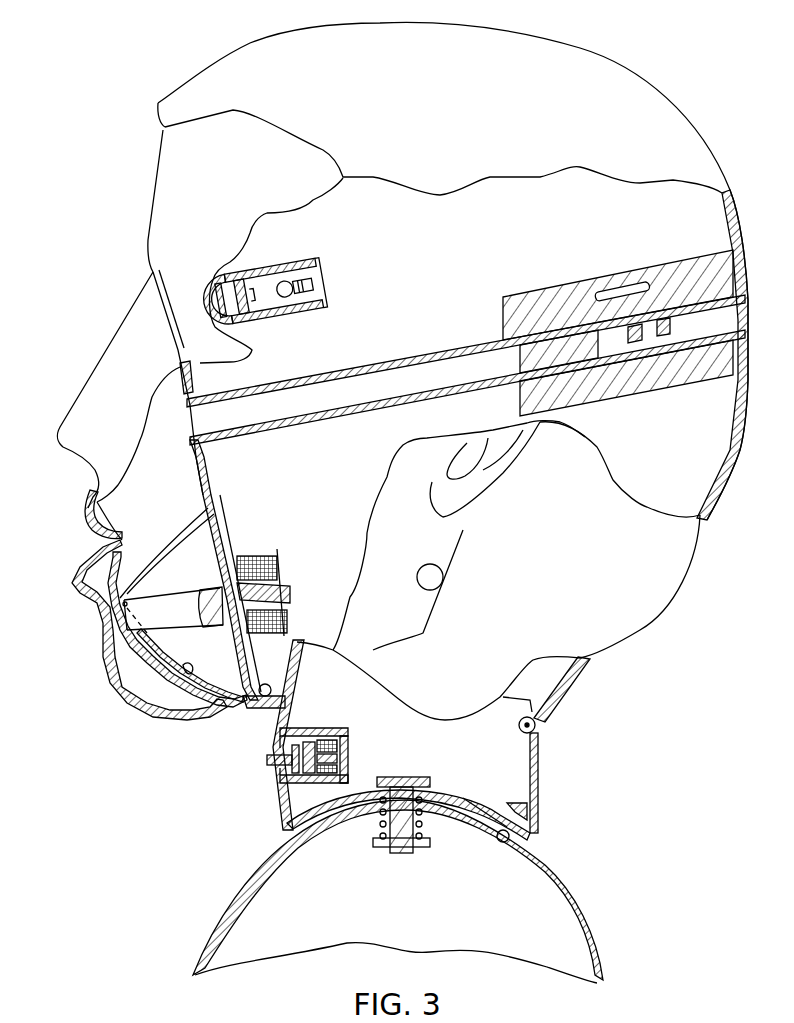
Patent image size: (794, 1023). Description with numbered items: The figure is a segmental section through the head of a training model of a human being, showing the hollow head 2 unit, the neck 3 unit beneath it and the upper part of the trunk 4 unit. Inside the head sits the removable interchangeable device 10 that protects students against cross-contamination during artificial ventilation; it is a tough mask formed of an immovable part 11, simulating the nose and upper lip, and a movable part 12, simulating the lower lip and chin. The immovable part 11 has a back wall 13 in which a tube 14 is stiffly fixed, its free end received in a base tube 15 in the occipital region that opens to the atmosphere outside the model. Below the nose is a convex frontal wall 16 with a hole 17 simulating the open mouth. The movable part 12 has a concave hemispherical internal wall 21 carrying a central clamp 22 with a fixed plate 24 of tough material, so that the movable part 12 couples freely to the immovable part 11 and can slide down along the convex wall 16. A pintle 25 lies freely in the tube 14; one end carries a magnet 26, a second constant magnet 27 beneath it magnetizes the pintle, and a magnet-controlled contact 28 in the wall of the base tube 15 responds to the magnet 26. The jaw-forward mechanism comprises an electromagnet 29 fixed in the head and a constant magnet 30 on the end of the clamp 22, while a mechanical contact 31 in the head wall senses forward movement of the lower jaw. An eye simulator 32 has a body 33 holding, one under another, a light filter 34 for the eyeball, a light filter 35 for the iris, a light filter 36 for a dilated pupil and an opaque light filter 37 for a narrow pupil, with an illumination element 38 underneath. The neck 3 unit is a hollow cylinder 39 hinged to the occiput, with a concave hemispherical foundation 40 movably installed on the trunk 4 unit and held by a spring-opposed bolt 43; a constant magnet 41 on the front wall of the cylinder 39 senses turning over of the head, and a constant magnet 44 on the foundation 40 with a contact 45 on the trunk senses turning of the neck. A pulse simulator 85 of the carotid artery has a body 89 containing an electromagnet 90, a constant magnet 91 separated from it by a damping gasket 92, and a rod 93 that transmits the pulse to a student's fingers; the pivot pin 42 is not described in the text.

The head unit 2 is at (657, 110).
The neck unit 3 is at (593, 767).
The trunk unit 4 is at (597, 923).
The interchangeable device 10 is at (47, 460).
The immovable part of the mask 11 is at (130, 353).
The movable part of the mask 12 is at (97, 627).
The back wall 13 is at (192, 463).
The tube 14 is at (407, 360).
The base tube 15 is at (538, 297).
The convex frontal wall 16 is at (187, 698).
The hole 17 is at (100, 541).
The internal wall 21 is at (147, 657).
The clamp 22 is at (153, 598).
The plate 24 is at (170, 653).
The pintle 25 is at (513, 337).
The magnet 26 is at (632, 376).
The constant magnet 27 is at (667, 350).
The contact 28 is at (615, 284).
The electromagnet 29 is at (264, 556).
The constant magnet 30 is at (205, 598).
The mechanical contact 31 is at (443, 571).
The eye simulator 32 is at (269, 293).
The body 33 is at (310, 313).
The light filter 34 is at (216, 304).
The light filter 35 is at (232, 320).
The light filter 36 is at (257, 308).
The opaque light filter 37 is at (262, 280).
The illumination element 38 is at (316, 285).
The cylinder 39 is at (538, 753).
The foundation 40 is at (480, 803).
The constant magnet 41 is at (295, 641).
The pivot pin 42 is at (266, 684).
The spring-opposed bolt 43 is at (387, 820).
The constant magnet 44 is at (527, 812).
The contact 45 is at (502, 843).
The pulse simulator of the carotid artery 85 is at (332, 736).
The body 89 is at (348, 773).
The electromagnet 90 is at (343, 740).
The constant magnet 91 is at (296, 742).
The damping gasket 92 is at (312, 740).
The rod 93 is at (270, 757).